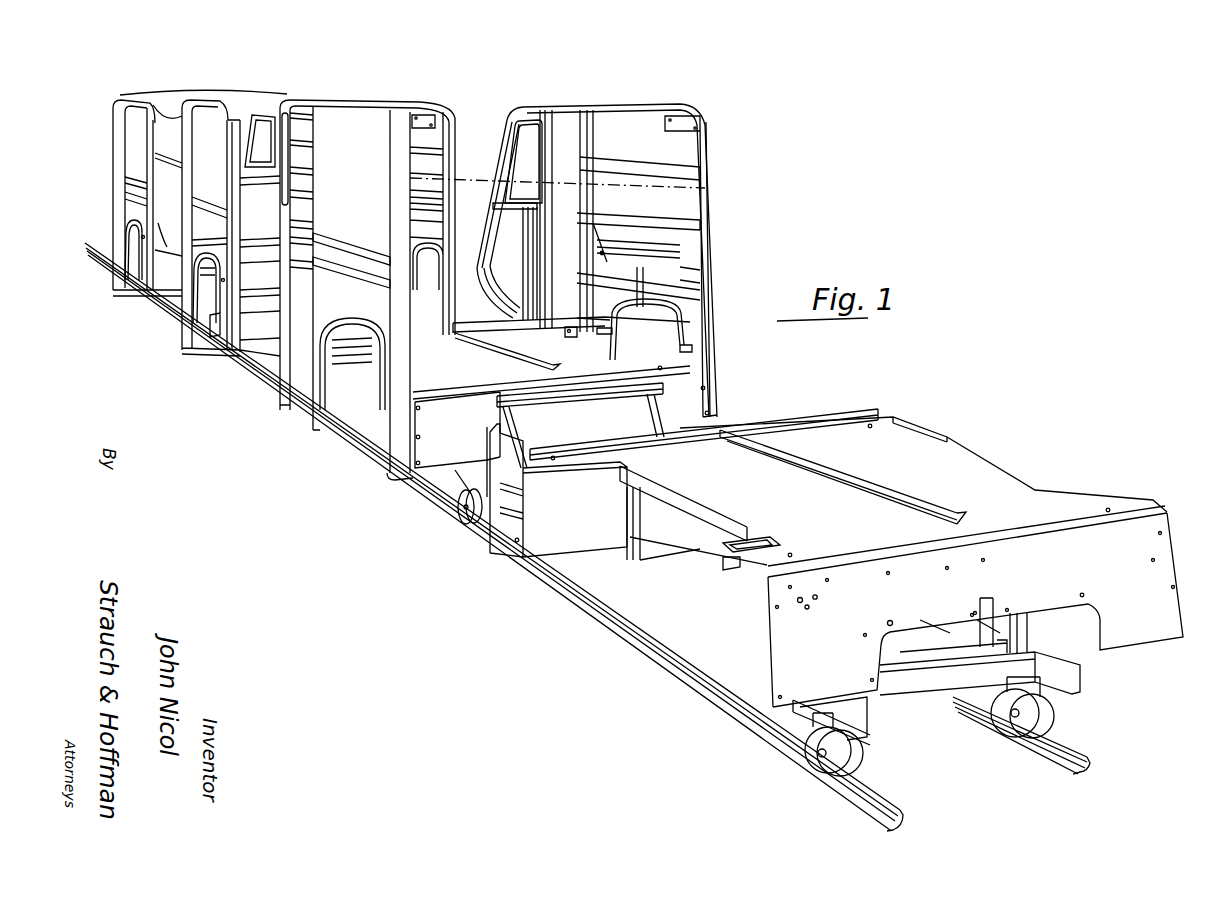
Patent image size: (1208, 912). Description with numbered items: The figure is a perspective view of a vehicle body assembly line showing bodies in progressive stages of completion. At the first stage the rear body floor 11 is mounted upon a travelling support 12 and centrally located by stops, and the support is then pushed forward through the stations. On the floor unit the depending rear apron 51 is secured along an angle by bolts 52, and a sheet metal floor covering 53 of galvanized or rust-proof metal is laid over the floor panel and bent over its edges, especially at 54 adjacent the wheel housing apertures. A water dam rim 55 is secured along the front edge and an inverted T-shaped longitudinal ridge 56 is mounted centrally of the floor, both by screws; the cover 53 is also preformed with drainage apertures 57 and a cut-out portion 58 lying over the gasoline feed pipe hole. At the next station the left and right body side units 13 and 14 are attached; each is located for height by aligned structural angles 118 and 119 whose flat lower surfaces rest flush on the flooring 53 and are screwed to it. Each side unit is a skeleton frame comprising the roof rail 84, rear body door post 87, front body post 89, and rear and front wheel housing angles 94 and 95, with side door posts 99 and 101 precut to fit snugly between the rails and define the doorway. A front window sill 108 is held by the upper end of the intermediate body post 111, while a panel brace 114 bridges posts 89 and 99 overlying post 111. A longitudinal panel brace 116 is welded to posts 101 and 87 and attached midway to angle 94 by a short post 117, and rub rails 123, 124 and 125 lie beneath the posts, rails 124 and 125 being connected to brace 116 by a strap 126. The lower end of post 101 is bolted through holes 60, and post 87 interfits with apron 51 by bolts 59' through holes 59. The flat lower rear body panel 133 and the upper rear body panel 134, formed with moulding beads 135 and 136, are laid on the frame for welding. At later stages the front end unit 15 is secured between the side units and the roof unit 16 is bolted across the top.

The rear body floor 11 is at (828, 579).
The travelling support 12 is at (690, 618).
The left body side unit 13 is at (656, 316).
The right body side unit 14 is at (781, 314).
The front end unit 15 is at (254, 216).
The roof unit 16 is at (163, 102).
The rear apron 51 is at (152, 292).
The bolts 52 is at (1075, 545).
The sheet metal floor covering 53 is at (955, 466).
The bent-over edge portion 54 is at (668, 505).
The water dam rim 55 is at (510, 326).
The longitudinal ridge 56 is at (528, 352).
The drainage apertures 57 is at (572, 341).
The cut-out portion 58 is at (424, 372).
The holes in apron 59 is at (991, 583).
The bolts 59' is at (589, 424).
The holes in panel 60 is at (522, 518).
The roof rail 84 is at (352, 101).
The rear body door post 87 is at (392, 178).
The front body post 89 is at (507, 147).
The rear wheel housing angle 94 is at (646, 318).
The front wheel housing angle 95 is at (500, 284).
The side door post 99 is at (545, 126).
The rear door post 101 is at (596, 130).
The front window sill 108 is at (500, 207).
The intermediate body post 111 is at (530, 267).
The panel brace 114 is at (505, 222).
The longitudinal panel brace 116 is at (700, 273).
The short post 117 is at (640, 287).
The structural angle 118 is at (598, 328).
The structural angle 119 is at (686, 345).
The rub rail 123 is at (653, 165).
The rub rail 124 is at (633, 222).
The rub rail 125 is at (597, 290).
The strap 126 is at (600, 239).
The lower rear body panel 133 is at (352, 314).
The upper rear body panel 134 is at (146, 168).
The moulding bead 135 is at (352, 243).
The moulding bead 136 is at (338, 272).